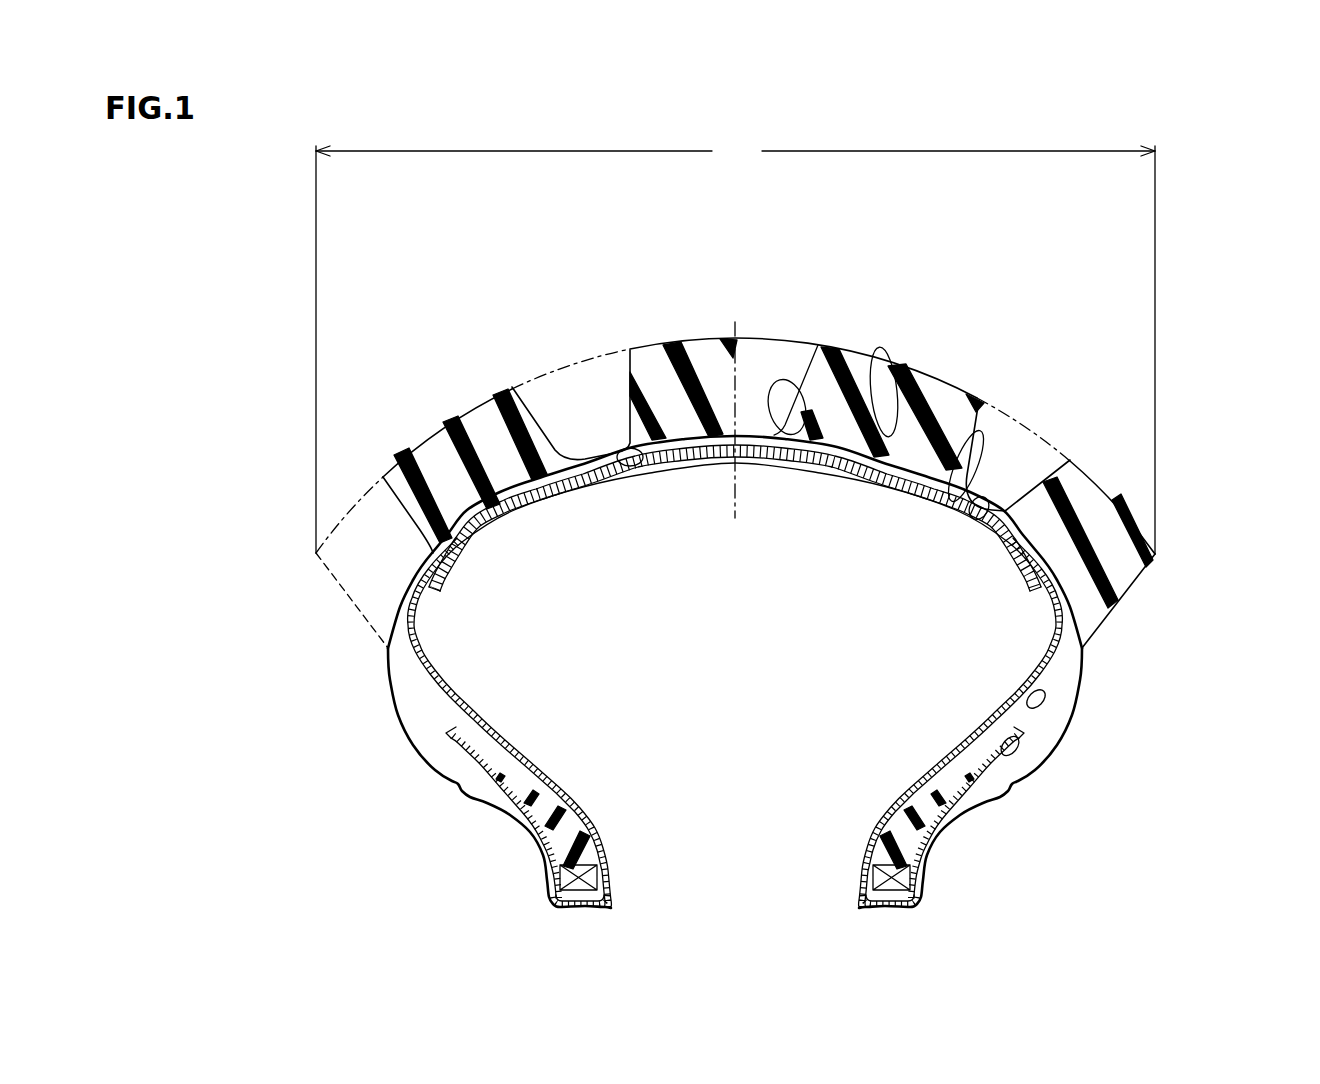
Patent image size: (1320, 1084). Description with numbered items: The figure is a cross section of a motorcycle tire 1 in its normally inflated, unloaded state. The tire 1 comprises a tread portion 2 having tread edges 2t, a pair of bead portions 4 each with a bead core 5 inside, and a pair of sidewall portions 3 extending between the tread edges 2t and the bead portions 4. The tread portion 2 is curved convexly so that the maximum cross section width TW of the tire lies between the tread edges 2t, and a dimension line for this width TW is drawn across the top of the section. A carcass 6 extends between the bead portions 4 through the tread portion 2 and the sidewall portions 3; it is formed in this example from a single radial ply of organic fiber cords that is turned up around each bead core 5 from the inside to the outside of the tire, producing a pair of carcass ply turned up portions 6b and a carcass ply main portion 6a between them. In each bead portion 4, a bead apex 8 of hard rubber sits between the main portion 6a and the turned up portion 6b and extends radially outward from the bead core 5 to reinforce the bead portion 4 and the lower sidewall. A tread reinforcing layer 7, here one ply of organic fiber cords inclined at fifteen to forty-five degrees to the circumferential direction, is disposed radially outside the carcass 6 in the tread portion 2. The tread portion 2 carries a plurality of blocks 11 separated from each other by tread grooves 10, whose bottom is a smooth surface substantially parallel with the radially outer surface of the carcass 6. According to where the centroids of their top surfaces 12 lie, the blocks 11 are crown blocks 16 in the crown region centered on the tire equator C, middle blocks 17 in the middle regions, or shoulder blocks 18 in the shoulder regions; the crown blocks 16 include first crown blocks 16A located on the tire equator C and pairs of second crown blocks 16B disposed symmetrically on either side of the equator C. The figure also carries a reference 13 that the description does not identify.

The motorcycle tire 1 is at (1193, 292).
The tread portion 2 is at (980, 333).
The tread edges 2t is at (316, 553).
The sidewall portions 3 is at (378, 717).
The bead portions 4 is at (613, 856).
The bead core 5 is at (563, 878).
The carcass 6 is at (887, 672).
The carcass ply main portion 6a is at (1026, 708).
The carcass ply turned up portions 6b is at (1003, 762).
The tread reinforcing layer 7 is at (636, 462).
The bead apex 8 is at (562, 827).
The tread grooves 10 is at (984, 515).
The blocks 11 is at (875, 228).
The top surfaces 12 is at (893, 420).
The groove bottom reinforcing rubber 13 is at (770, 435).
The crown blocks 16 is at (807, 346).
The first crown blocks 16A is at (710, 335).
The second crown blocks 16B is at (847, 343).
The middle blocks 17 is at (463, 403).
The shoulder blocks 18 is at (1130, 507).
The tire equator C is at (735, 404).
The maximum cross section width TW is at (735, 345).